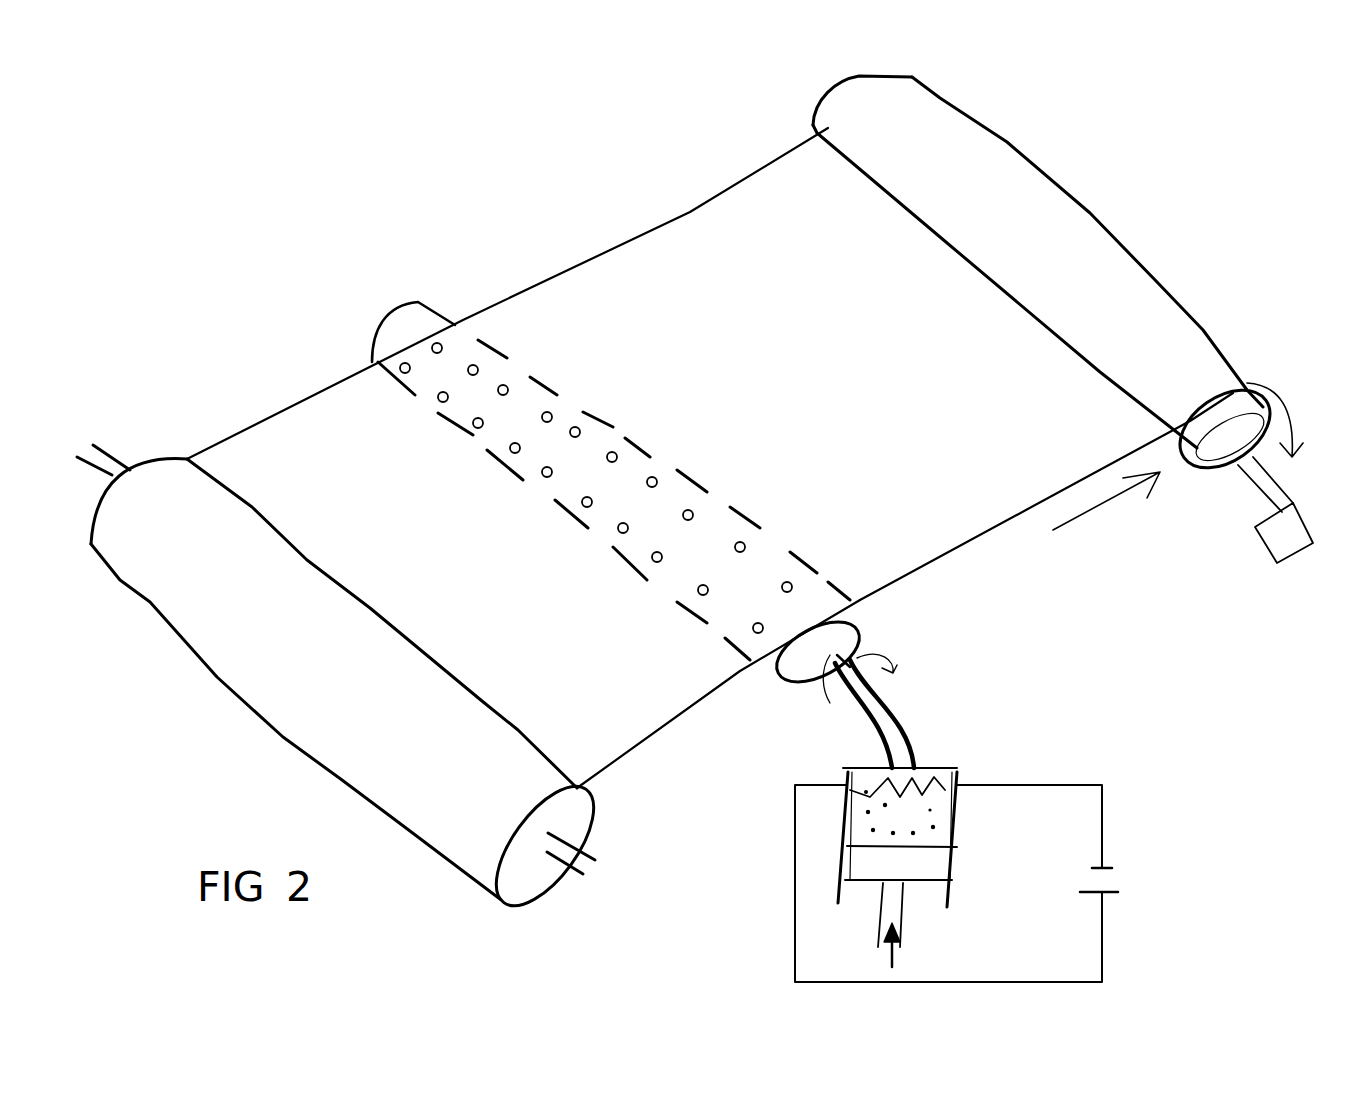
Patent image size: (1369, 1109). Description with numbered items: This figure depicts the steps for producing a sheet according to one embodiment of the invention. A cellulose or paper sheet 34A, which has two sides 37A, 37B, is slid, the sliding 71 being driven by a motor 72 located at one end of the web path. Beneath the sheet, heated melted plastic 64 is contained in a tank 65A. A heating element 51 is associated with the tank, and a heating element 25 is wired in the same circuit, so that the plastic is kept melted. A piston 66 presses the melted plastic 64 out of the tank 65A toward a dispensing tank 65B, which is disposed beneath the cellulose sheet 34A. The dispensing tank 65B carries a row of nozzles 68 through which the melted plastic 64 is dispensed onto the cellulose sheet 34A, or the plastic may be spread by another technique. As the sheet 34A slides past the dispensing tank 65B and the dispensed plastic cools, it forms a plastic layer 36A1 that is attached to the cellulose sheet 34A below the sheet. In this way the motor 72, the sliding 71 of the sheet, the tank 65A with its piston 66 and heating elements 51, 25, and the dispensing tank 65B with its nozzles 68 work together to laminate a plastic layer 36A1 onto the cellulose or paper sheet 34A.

The heating element 25 is at (1092, 898).
The cellulose or paper sheet 34A is at (747, 278).
The attached plastic layer 36A1 is at (933, 553).
The side of cellulose or paper sheet 37A is at (873, 587).
The side of cellulose or paper sheet 37B is at (757, 220).
The heating element 51 is at (922, 783).
The melted plastic 64 is at (907, 802).
The tank 65A is at (957, 825).
The dispensing tank 65B is at (420, 318).
The piston 66 is at (927, 865).
The nozzle 68 is at (745, 547).
The sliding 71 is at (1106, 504).
The motor 72 is at (1285, 535).